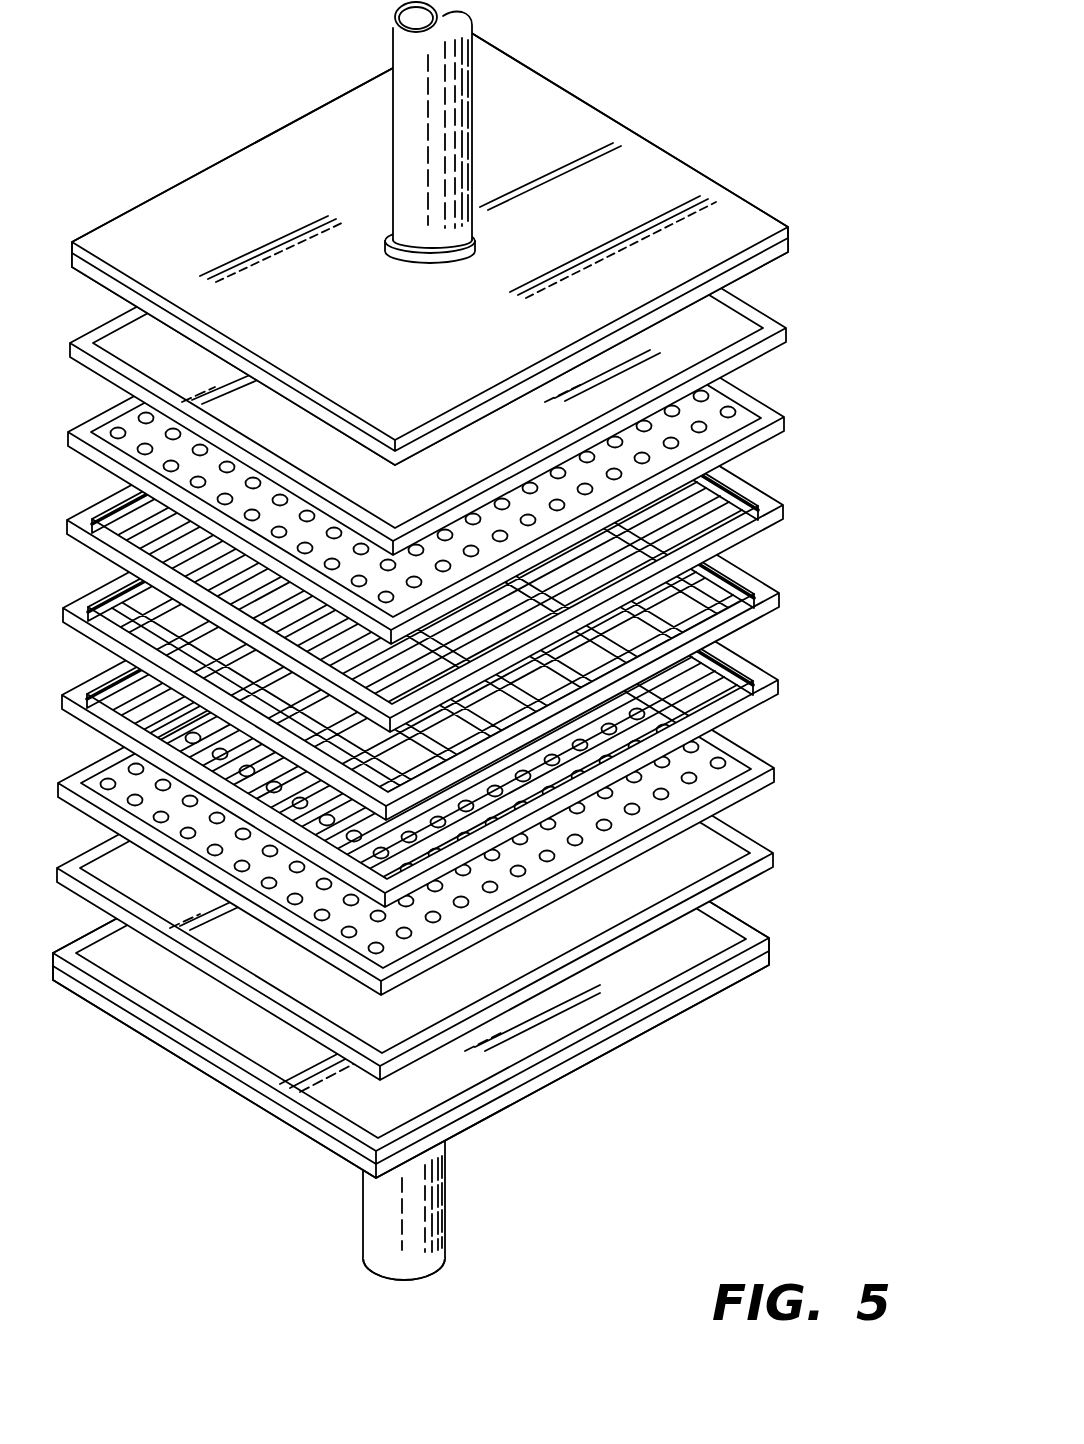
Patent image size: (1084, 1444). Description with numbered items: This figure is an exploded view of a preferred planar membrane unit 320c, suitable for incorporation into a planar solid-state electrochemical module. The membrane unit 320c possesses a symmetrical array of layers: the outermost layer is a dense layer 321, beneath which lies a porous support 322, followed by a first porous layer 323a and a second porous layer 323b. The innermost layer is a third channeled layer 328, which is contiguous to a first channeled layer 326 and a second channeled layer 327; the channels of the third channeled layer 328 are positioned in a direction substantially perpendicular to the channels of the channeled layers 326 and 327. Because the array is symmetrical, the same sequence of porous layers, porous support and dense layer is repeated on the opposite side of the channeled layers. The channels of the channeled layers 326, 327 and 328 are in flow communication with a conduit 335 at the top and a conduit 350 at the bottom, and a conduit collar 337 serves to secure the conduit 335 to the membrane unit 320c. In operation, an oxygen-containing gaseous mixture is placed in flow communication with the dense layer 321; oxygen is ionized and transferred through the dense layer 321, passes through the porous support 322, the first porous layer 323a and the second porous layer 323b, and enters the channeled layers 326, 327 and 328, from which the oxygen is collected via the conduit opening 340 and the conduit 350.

The membrane unit 320c is at (206, 250).
The dense layer 321 is at (769, 972).
The porous support 322 is at (769, 950).
The first porous layer 323a is at (773, 853).
The second porous layer 323b is at (774, 768).
The first channeled layer 326 is at (783, 505).
The second channeled layer 327 is at (778, 680).
The third channeled layer 328 is at (779, 593).
The conduit 335 is at (376, 57).
The conduit collar 337 is at (384, 244).
The conduit opening 340 is at (382, 1210).
The conduit 350 is at (404, 1279).